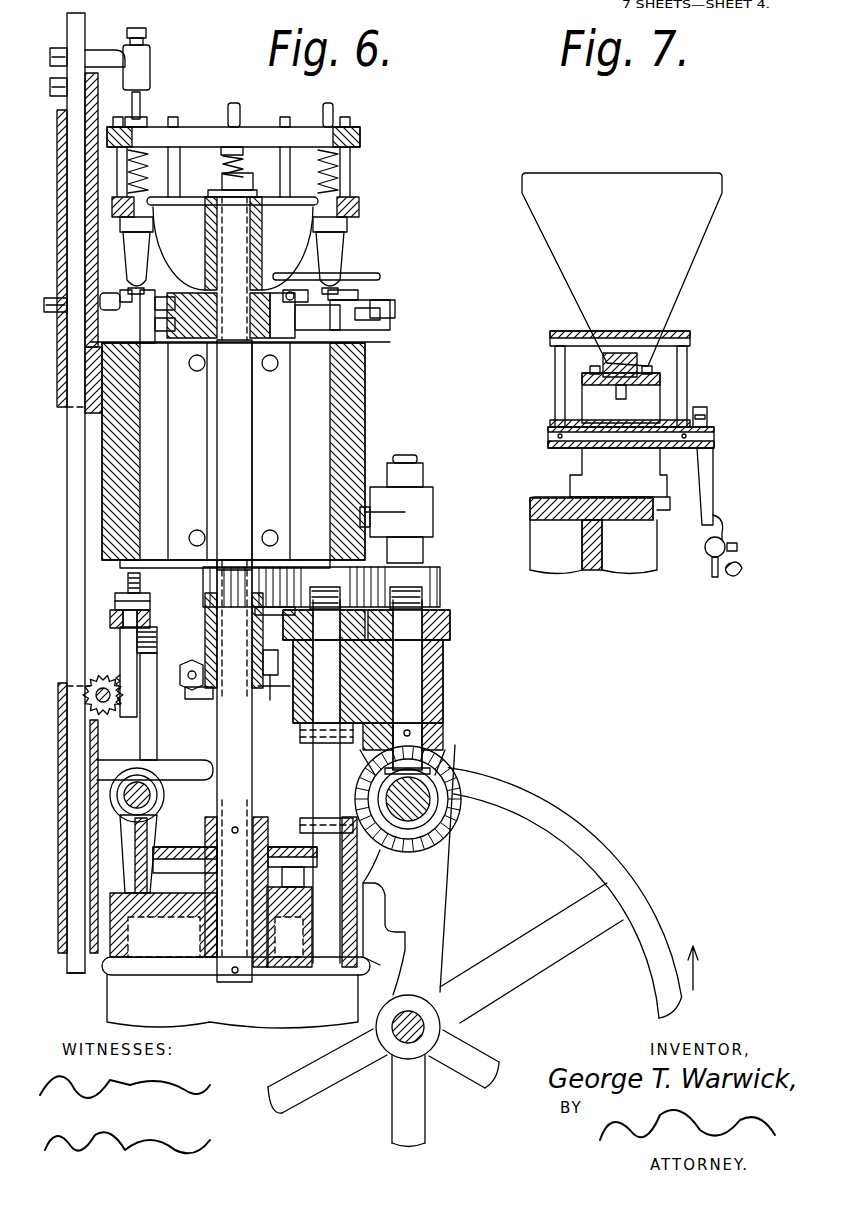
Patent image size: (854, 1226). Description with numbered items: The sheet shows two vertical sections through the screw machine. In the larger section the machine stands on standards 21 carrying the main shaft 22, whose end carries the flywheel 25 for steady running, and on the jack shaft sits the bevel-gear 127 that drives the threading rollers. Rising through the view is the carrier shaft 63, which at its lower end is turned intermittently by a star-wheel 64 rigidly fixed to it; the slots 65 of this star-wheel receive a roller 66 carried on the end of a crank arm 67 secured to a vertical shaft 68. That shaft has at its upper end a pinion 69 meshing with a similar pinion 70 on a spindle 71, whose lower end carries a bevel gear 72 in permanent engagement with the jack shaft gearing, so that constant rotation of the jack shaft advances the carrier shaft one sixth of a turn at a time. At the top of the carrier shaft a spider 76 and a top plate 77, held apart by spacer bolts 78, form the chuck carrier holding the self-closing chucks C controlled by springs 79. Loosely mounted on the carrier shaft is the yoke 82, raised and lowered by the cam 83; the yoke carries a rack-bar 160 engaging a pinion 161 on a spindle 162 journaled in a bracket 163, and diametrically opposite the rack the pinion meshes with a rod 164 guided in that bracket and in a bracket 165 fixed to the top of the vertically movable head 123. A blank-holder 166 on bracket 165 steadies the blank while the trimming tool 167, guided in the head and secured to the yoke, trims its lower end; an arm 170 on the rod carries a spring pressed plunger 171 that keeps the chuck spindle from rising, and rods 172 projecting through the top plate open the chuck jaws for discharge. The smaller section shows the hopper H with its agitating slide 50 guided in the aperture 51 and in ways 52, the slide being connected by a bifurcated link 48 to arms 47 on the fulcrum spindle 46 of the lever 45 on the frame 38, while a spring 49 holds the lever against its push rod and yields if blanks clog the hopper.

In FIG. 6, the arm 170 is at (100, 52).
In FIG. 6, the spring pressed plunger 171 is at (142, 90).
In FIG. 6, the rod 172 is at (141, 108).
In FIG. 6, the spring 79 is at (148, 170).
In FIG. 6, the top plate 77 is at (360, 137).
In FIG. 6, the spacer bolt 78 is at (173, 167).
In FIG. 6, the spider 76 is at (318, 203).
In FIG. 6, the chuck C is at (147, 268).
In FIG. 6, the rod 164 is at (67, 88).
In FIG. 6, the bracket 165 is at (57, 200).
In FIG. 6, the blank-holder 166 is at (57, 298).
In FIG. 6, the trimming tool 167 is at (133, 327).
In FIG. 6, the movable head 123 is at (355, 421).
In FIG. 6, the yoke 82 is at (110, 620).
In FIG. 6, the rack-bar 160 is at (125, 665).
In FIG. 6, the pinion 161 is at (90, 697).
In FIG. 6, the spindle 162 is at (93, 708).
In FIG. 6, the bracket 163 is at (60, 762).
In FIG. 6, the pinion 69 is at (252, 600).
In FIG. 6, the pinion 70 is at (450, 630).
In FIG. 6, the spindle 71 is at (410, 677).
In FIG. 6, the bevel gear 72 is at (440, 750).
In FIG. 6, the cam 83 is at (262, 690).
In FIG. 6, the vertical shaft 68 is at (315, 752).
In FIG. 6, the roller 66 is at (278, 847).
In FIG. 6, the carrier shaft 63 is at (179, 771).
In FIG. 6, the star-wheel 64 is at (180, 848).
In FIG. 6, the slot 65 is at (163, 887).
In FIG. 6, the bevel-gear 127 is at (455, 823).
In FIG. 6, the flywheel 25 is at (612, 860).
In FIG. 6, the crank arm 67 is at (284, 960).
In FIG. 6, the standard 21 is at (243, 1022).
In FIG. 6, the main shaft 22 is at (424, 1027).
In FIG. 7, the hopper H is at (680, 252).
In FIG. 7, the bifurcated link 48 is at (645, 334).
In FIG. 7, the aperture 51 is at (604, 370).
In FIG. 7, the agitating slide 50 is at (640, 373).
In FIG. 7, the ways 52 is at (584, 386).
In FIG. 7, the arm 47 is at (555, 415).
In FIG. 7, the fulcrum spindle 46 is at (710, 439).
In FIG. 7, the lever 45 is at (714, 483).
In FIG. 7, the frame 38 is at (540, 511).
In FIG. 7, the spring 49 is at (744, 571).